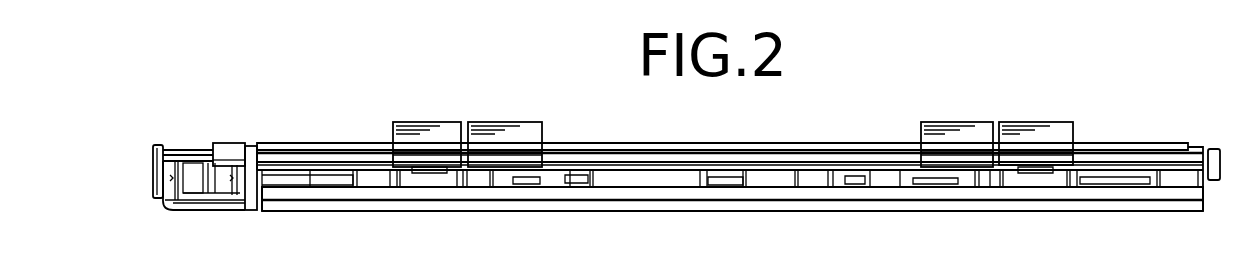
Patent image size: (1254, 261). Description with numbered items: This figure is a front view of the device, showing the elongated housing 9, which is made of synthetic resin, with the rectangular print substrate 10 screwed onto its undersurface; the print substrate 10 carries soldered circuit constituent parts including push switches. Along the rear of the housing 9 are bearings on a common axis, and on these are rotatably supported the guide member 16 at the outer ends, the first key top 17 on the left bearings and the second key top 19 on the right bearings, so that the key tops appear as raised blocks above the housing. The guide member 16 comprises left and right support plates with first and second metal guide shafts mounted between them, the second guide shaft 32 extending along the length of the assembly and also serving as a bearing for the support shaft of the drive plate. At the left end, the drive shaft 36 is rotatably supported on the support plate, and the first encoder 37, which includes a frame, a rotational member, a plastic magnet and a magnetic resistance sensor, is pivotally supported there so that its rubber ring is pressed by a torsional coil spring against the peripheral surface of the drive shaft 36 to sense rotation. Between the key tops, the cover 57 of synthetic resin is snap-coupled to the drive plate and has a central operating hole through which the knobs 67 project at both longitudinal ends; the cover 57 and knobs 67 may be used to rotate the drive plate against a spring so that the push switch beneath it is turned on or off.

The housing 9 is at (790, 192).
The print substrate 10 is at (853, 208).
The guide member 16 is at (250, 213).
The first key top 17 is at (430, 128).
The second key top 19 is at (1042, 130).
The second guide shaft 32 is at (355, 168).
The drive shaft 36 is at (228, 143).
The first encoder 37 is at (197, 197).
The cover 57 is at (703, 163).
The knobs 67 is at (512, 128).